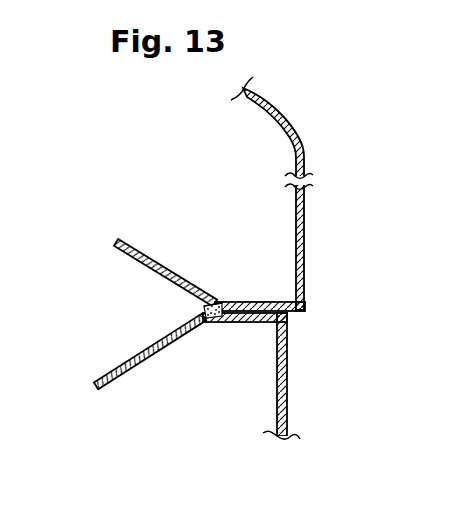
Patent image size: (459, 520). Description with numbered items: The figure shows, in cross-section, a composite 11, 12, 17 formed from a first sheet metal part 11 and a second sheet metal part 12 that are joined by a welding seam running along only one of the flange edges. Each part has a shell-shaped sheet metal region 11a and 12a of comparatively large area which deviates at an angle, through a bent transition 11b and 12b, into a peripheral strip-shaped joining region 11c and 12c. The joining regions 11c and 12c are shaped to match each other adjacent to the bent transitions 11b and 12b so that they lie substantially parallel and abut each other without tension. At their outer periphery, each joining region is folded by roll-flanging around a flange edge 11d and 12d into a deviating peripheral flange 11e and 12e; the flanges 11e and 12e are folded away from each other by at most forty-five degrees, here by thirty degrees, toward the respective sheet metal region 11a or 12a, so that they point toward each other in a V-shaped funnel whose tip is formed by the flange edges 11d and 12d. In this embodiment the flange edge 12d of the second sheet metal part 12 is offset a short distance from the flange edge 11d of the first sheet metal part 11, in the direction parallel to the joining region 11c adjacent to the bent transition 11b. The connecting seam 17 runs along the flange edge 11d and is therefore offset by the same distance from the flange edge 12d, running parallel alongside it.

The first sheet metal part 11 is at (306, 426).
The sheet metal region 11a is at (287, 393).
The bent transition 11b is at (290, 317).
The joining region 11c is at (245, 323).
The flange edge 11d is at (199, 315).
The flange 11e is at (93, 390).
The second sheet metal part 12 is at (319, 143).
The sheet metal region 12a is at (305, 237).
The bent transition 12b is at (302, 313).
The joining region 12c is at (265, 302).
The flange edge 12d is at (213, 304).
The flange 12e is at (114, 240).
The connecting seam 17 is at (206, 309).